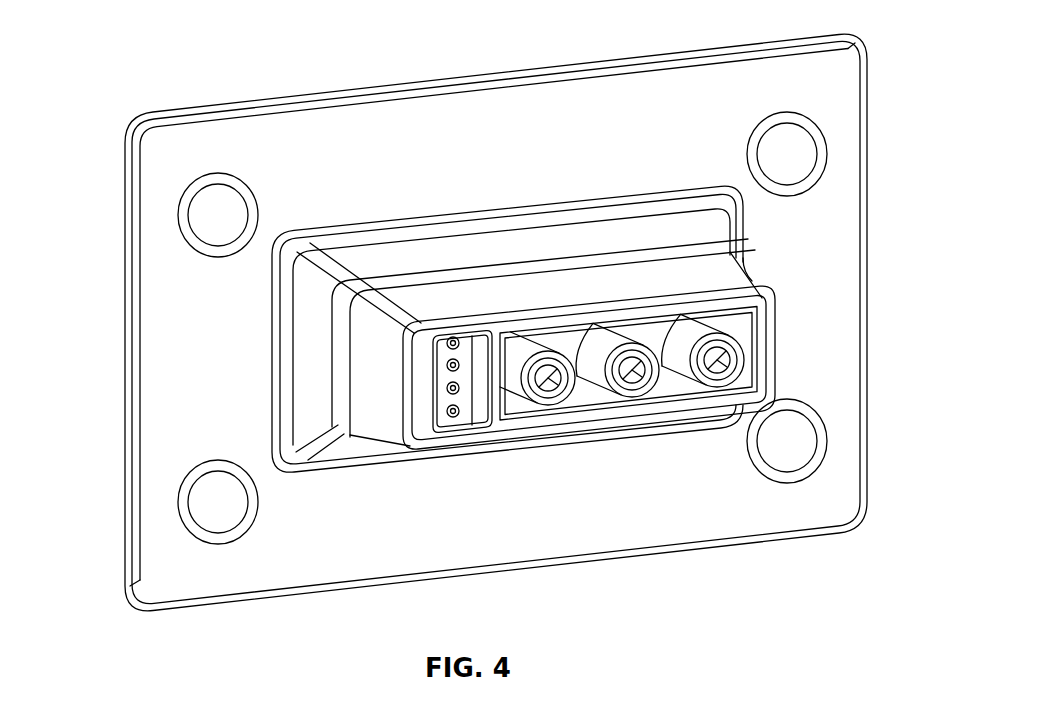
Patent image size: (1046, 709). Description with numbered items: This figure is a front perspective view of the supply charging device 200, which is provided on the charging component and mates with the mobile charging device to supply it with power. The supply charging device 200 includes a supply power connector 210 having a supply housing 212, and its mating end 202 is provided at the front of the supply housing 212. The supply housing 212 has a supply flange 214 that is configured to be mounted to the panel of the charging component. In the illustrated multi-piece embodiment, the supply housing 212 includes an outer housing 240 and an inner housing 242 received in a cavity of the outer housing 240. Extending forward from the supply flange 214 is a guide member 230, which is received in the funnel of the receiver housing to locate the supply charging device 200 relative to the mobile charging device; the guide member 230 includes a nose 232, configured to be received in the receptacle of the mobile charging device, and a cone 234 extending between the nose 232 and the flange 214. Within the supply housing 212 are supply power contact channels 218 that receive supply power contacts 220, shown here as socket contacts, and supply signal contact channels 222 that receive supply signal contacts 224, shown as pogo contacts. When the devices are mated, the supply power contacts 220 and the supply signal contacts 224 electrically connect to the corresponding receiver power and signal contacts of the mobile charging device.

The supply charging device 200 is at (503, 322).
The mating end 202 is at (617, 433).
The supply power connector 210 is at (509, 322).
The supply housing 212 is at (778, 355).
The supply flange 214 is at (257, 125).
The supply power contact channels 218 is at (553, 395).
The supply power contacts 220 is at (565, 395).
The supply signal contact channels 222 is at (449, 432).
The supply signal contacts 224 is at (485, 430).
The guide member 230 is at (728, 274).
The nose 232 is at (665, 280).
The cone 234 is at (613, 232).
The outer housing 240 is at (150, 247).
The inner housing 242 is at (125, 222).